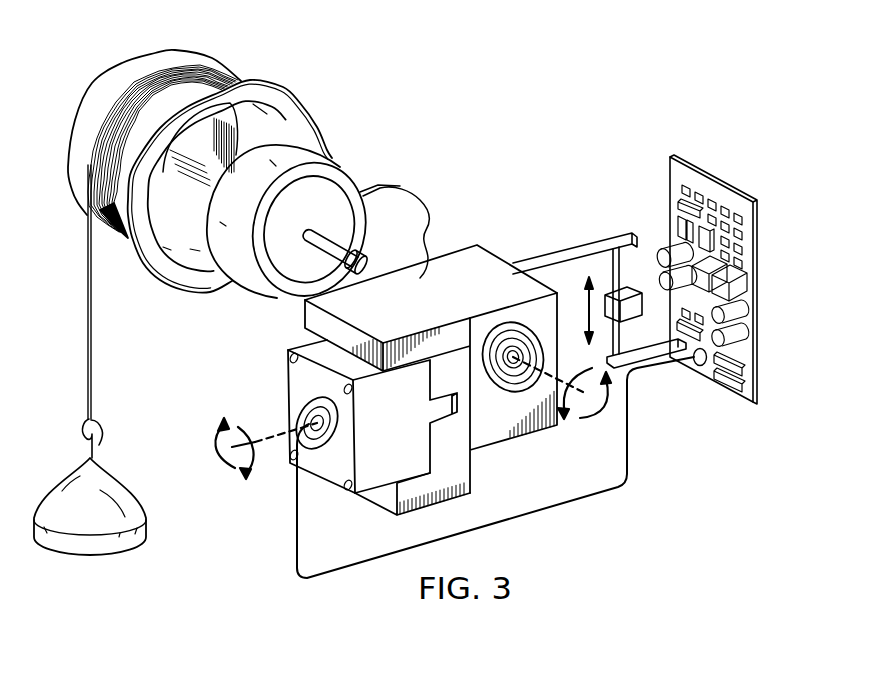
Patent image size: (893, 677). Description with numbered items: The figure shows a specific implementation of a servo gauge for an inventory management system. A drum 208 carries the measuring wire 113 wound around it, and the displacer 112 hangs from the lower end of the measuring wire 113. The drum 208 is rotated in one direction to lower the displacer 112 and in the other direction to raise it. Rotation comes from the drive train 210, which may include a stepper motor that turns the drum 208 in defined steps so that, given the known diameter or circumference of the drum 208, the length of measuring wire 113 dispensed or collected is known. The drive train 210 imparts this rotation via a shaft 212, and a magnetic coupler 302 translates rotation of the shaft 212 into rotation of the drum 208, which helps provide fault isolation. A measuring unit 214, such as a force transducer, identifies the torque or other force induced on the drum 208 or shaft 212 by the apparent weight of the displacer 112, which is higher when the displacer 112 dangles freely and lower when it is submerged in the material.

The drum 208 is at (122, 72).
The measuring wire 113 is at (87, 297).
The displacer 112 is at (77, 553).
The magnetic coupler 302 is at (336, 156).
The shaft 212 is at (305, 245).
The drive train 210 is at (497, 461).
The measuring unit 214 is at (718, 178).